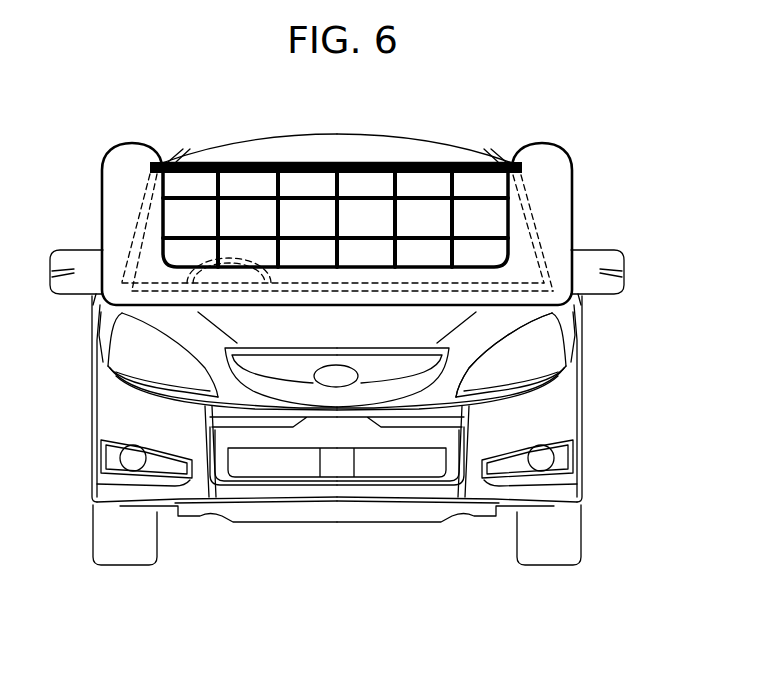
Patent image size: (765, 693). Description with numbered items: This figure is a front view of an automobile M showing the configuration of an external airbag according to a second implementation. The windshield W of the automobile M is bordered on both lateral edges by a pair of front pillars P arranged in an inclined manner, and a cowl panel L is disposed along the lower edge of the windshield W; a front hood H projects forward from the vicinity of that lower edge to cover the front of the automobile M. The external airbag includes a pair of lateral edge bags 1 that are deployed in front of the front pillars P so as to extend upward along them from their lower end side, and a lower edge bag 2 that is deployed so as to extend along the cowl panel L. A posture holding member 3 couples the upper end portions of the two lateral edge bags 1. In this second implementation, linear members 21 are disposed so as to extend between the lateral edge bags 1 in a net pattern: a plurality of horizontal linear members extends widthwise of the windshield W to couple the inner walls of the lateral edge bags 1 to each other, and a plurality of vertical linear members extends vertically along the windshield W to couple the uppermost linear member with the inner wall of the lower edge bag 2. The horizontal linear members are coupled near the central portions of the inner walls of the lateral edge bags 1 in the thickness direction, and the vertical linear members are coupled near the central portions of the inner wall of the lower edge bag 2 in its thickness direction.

The lateral edge bags 1 is at (572, 188).
The lower edge bag 2 is at (548, 380).
The posture holding member 3 is at (331, 162).
The linear members 21 is at (425, 192).
The windshield W is at (252, 211).
The front pillars P is at (528, 197).
The cowl panel L is at (505, 284).
The front hood H is at (490, 318).
The automobile M is at (318, 522).